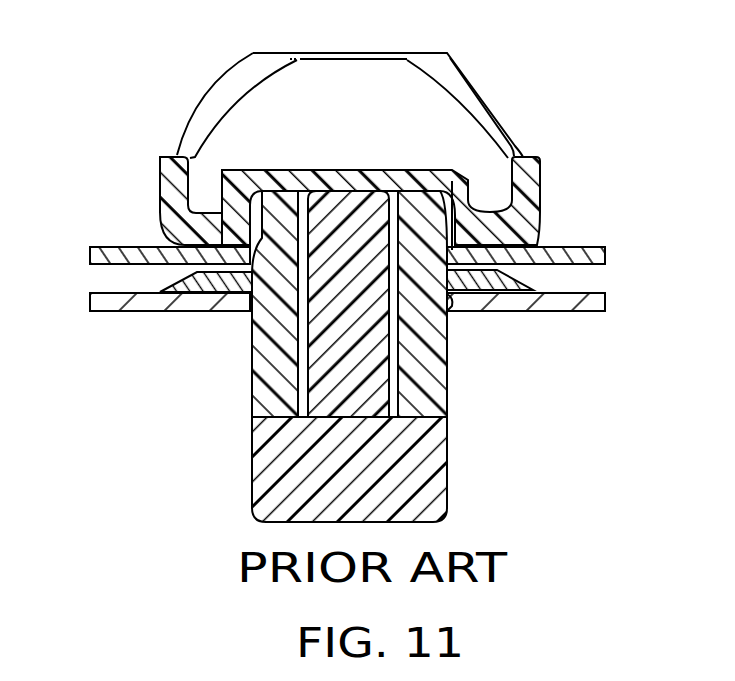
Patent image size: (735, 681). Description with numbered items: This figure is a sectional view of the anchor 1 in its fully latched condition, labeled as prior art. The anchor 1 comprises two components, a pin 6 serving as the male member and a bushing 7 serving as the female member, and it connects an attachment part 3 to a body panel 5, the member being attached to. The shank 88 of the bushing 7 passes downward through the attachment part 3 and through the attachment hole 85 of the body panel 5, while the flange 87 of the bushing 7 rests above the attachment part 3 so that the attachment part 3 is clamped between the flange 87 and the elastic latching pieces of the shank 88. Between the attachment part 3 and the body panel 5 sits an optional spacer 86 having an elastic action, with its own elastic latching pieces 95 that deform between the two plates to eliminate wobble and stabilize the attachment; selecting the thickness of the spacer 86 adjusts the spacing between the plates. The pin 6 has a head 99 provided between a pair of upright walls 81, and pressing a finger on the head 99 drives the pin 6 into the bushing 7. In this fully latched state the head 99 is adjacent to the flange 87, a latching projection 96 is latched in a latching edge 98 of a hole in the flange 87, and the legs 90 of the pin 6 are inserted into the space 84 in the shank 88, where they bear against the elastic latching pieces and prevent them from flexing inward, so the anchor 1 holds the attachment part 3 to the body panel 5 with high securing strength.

The anchor 1 is at (640, 60).
The attachment part 3 is at (605, 252).
The body panel 5 is at (605, 298).
The pin 6 is at (445, 165).
The bushing 7 is at (556, 175).
The upright walls 81 is at (207, 114).
The space 84 is at (437, 361).
The attachment hole 85 is at (447, 323).
The spacer 86 is at (548, 280).
The flange 87 is at (523, 231).
The shank 88 is at (433, 487).
The legs 90 is at (270, 350).
The elastic latching pieces 95 is at (180, 280).
The latching projection 96 is at (237, 245).
The latching edge 98 is at (250, 225).
The head 99 is at (362, 170).